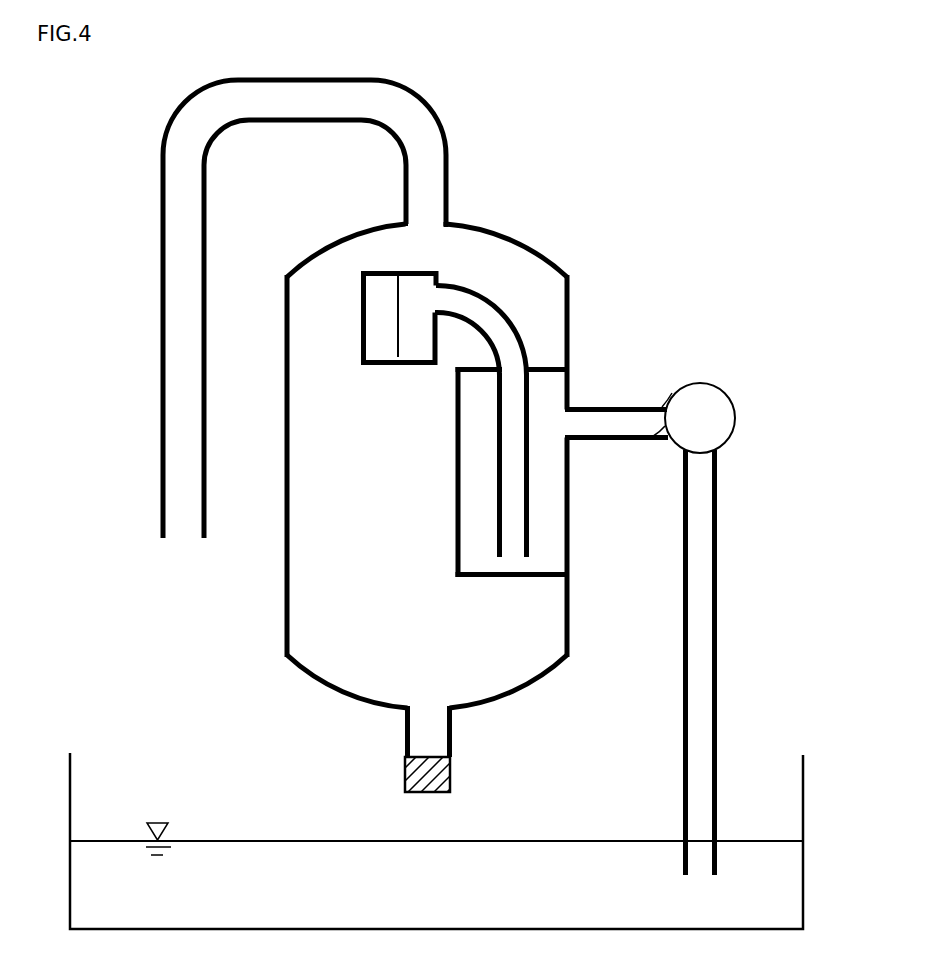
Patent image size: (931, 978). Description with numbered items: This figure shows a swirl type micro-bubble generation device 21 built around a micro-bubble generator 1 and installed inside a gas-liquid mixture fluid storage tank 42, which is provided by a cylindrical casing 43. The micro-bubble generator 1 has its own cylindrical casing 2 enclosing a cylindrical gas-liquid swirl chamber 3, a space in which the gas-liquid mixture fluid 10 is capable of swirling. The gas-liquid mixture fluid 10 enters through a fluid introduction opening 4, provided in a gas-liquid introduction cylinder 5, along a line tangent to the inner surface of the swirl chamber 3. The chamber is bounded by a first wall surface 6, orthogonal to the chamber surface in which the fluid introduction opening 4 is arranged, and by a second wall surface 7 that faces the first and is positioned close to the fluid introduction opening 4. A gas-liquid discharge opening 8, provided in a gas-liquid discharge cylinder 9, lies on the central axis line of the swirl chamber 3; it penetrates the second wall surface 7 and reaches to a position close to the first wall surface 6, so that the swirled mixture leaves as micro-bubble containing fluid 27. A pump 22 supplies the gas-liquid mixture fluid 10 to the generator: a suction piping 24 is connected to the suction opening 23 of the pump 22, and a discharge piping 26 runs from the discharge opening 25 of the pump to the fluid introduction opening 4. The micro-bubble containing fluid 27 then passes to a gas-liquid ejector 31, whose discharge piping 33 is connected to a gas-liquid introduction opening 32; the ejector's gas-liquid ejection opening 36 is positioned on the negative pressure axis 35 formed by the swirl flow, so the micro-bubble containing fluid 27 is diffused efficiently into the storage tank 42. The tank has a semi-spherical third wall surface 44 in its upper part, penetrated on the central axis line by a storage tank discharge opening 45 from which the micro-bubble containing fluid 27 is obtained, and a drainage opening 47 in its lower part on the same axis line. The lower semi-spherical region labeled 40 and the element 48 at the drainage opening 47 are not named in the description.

The micro-bubble generator 1 is at (447, 581).
The cylindrical casing 2 is at (455, 541).
The cylindrical gas-liquid swirl chamber 3 is at (548, 518).
The fluid introduction opening 4 is at (567, 419).
The gas-liquid introduction cylinder 5 is at (608, 413).
The first wall surface 6 is at (516, 578).
The second wall surface 7 is at (562, 366).
The gas-liquid discharge opening 8 is at (506, 559).
The gas-liquid discharge cylinder 9 is at (530, 490).
The gas-liquid mixture fluid 10 is at (632, 411).
The micro-bubble generation device 21 is at (530, 331).
The pump 22 is at (727, 398).
The suction opening 23 is at (718, 458).
The suction piping 24 is at (717, 605).
The discharge opening 25 is at (641, 441).
The discharge piping 26 is at (622, 440).
The micro-bubble containing fluid 27 is at (497, 440).
The gas-liquid ejector 31 is at (352, 312).
The gas-liquid introduction opening 32 is at (430, 300).
The discharge piping 33 is at (480, 333).
The negative pressure axis 35 is at (378, 274).
The gas-liquid ejection opening 36 is at (398, 366).
The lower dome 40 is at (303, 682).
The gas-liquid mixture fluid storage tank 42 is at (543, 223).
The cylindrical casing 43 is at (284, 343).
The third wall surface 44 is at (310, 258).
The storage tank discharge opening 45 is at (425, 177).
The drainage opening 47 is at (405, 769).
The plug 48 is at (420, 795).